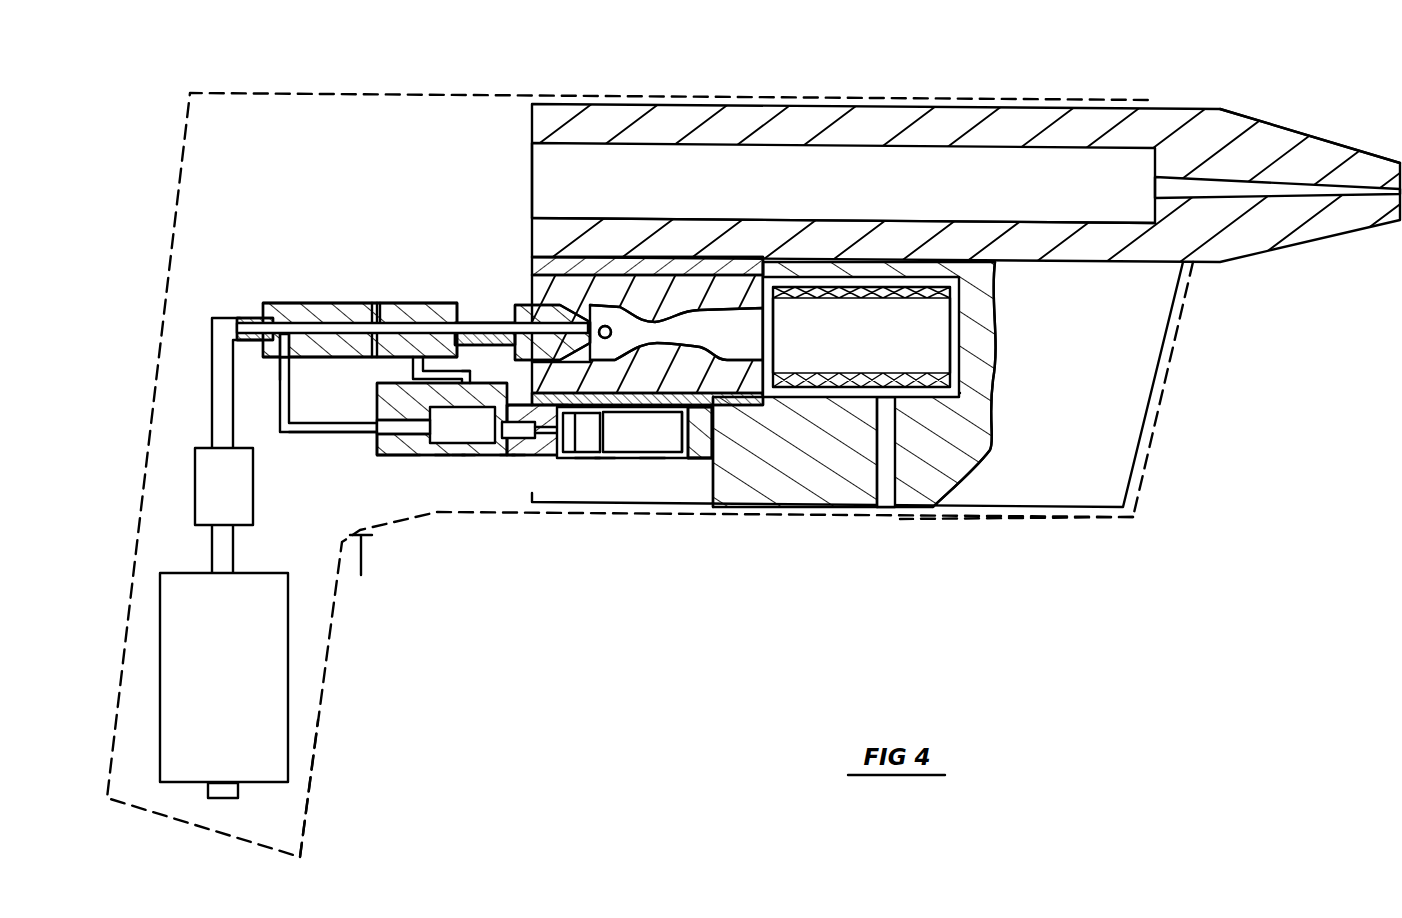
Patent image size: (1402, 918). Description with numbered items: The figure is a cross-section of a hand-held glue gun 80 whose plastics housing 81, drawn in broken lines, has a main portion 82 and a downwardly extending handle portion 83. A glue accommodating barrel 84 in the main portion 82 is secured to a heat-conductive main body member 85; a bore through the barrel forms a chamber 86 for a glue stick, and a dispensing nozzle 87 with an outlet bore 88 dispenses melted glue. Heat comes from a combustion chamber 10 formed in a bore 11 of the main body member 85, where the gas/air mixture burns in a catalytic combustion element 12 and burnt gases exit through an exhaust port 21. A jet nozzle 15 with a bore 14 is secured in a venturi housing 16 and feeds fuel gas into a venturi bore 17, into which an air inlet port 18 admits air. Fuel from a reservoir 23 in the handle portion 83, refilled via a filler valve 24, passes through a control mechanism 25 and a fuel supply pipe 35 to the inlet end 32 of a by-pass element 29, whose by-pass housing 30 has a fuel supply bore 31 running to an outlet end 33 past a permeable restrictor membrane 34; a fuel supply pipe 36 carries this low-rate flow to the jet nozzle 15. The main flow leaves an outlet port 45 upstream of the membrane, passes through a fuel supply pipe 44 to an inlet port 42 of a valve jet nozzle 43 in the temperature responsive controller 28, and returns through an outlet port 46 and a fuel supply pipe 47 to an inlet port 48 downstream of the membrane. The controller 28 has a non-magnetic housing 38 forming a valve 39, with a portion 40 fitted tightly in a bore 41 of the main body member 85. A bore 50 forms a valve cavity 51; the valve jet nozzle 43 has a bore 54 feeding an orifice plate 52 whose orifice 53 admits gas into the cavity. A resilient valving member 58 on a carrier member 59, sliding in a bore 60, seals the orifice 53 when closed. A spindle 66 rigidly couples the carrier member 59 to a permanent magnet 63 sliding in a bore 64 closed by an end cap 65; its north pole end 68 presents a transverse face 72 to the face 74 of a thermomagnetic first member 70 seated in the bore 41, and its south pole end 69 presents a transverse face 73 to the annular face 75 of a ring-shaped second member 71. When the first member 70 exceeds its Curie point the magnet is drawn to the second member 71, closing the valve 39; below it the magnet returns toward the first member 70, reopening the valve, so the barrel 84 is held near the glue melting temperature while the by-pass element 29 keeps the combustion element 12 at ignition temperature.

The combustion chamber 10 is at (955, 310).
The bore 11 is at (968, 410).
The combustion element 12 is at (945, 385).
The bore 14 is at (581, 325).
The jet nozzle 15 is at (555, 310).
The venturi housing 16 is at (767, 362).
The venturi bore 17 is at (724, 270).
The air inlet port 18 is at (609, 326).
The exhaust port 21 is at (887, 470).
The fuel gas reservoir 23 is at (182, 638).
The filler valve 24 is at (218, 800).
The gas supply control mechanism 25 is at (207, 492).
The temperature responsive controller 28 is at (510, 457).
The by-pass element 29 is at (385, 325).
The by-pass housing 30 is at (410, 325).
The fuel supply bore 31 is at (427, 322).
The inlet end 32 is at (255, 320).
The outlet end 33 is at (470, 322).
The restrictor membrane 34 is at (373, 320).
The fuel supply pipe 35 is at (220, 373).
The fuel supply pipe 36 is at (508, 320).
The housing 38 is at (517, 457).
The valve 39 is at (443, 457).
The portion of housing 40 is at (552, 457).
The bore 41 is at (658, 457).
The inlet port 42 is at (380, 437).
The valve jet nozzle 43 is at (383, 457).
The fuel supply pipe 44 is at (297, 408).
The outlet port 45 is at (293, 352).
The outlet port 46 is at (470, 380).
The fuel supply pipe 47 is at (410, 365).
The inlet port 48 is at (398, 322).
The bore 50 is at (460, 457).
The valve cavity 51 is at (470, 457).
The orifice plate 52 is at (430, 457).
The inlet fuel gas delivery orifice 53 is at (447, 420).
The bore 54 is at (385, 472).
The valving member 58 is at (488, 385).
The carrier member 59 is at (540, 457).
The bore 60 is at (528, 457).
The permanent magnet 63 is at (670, 457).
The magnet accommodating bore 64 is at (690, 457).
The end cap 65 is at (740, 457).
The spindle 66 is at (597, 457).
The north pole end 68 is at (747, 372).
The south pole end 69 is at (643, 400).
The first member 70 is at (720, 457).
The second member 71 is at (587, 457).
The transverse face 72 is at (713, 430).
The transverse face 73 is at (600, 362).
The face 74 is at (700, 413).
The annular face 75 is at (590, 425).
The glue gun 80 is at (1005, 81).
The housing 81 is at (354, 573).
The main portion 82 is at (1052, 520).
The handle portion 83 is at (317, 730).
The glue accommodating barrel 84 is at (808, 122).
The main body member 85 is at (947, 458).
The chamber 86 is at (1105, 175).
The dispensing nozzle 87 is at (1268, 135).
The outlet bore 88 is at (1320, 195).